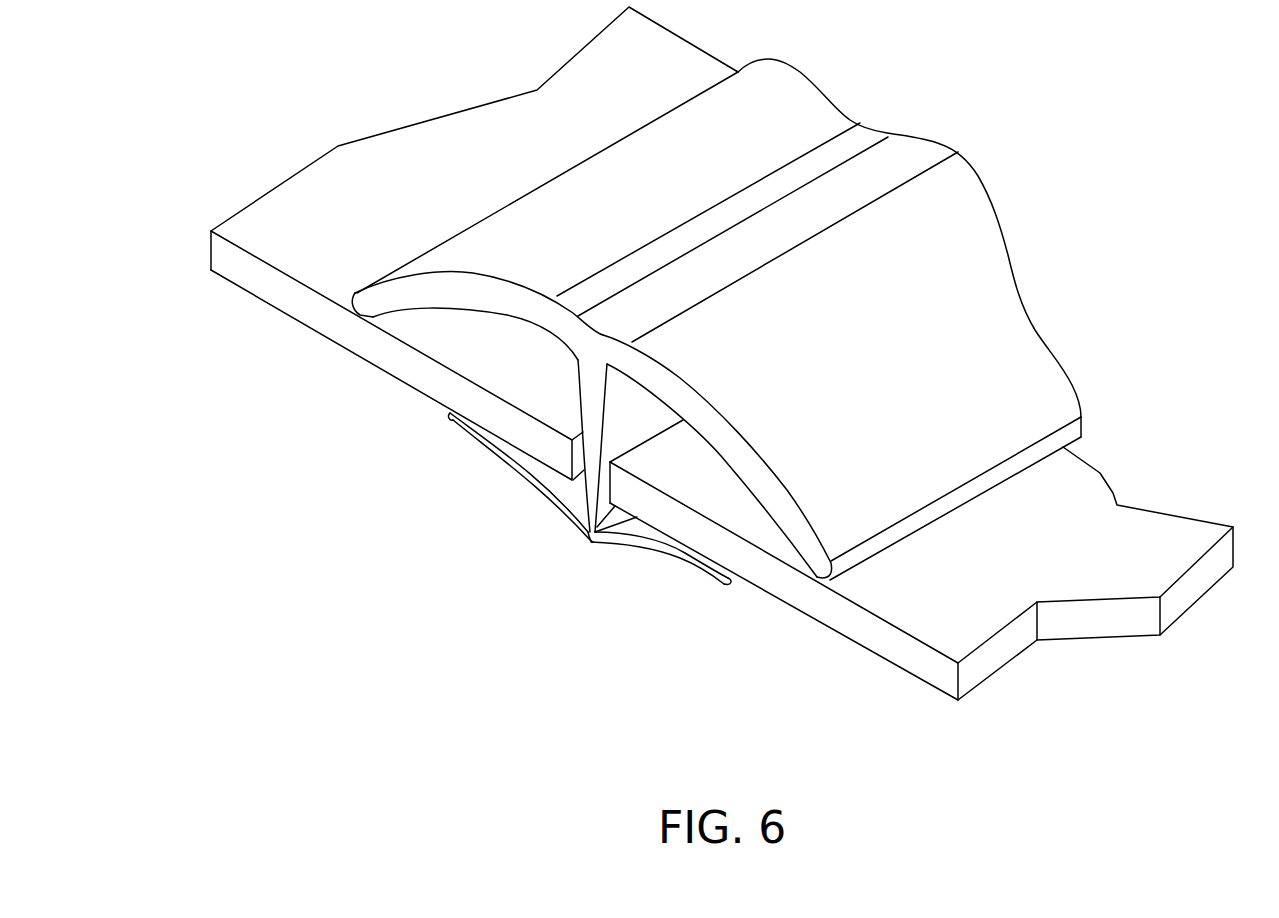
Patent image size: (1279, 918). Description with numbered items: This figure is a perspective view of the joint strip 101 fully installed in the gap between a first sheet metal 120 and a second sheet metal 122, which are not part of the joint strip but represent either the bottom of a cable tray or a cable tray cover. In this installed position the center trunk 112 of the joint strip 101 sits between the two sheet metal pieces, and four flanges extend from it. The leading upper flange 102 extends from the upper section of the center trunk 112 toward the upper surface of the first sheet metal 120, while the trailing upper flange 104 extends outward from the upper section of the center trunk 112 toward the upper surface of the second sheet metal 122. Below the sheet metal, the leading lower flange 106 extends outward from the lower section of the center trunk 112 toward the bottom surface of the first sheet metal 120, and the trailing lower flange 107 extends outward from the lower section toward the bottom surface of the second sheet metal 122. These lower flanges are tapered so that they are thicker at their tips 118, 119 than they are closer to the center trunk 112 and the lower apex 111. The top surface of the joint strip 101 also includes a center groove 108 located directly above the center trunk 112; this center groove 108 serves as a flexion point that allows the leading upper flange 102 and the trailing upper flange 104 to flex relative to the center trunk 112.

The joint strip 101 is at (997, 137).
The leading upper flange 102 is at (853, 495).
The trailing upper flange 104 is at (523, 223).
The leading lower flange 106 is at (667, 553).
The trailing lower flange 107 is at (510, 463).
The center groove 108 is at (655, 278).
The lower apex 111 is at (592, 545).
The center trunk 112 is at (593, 400).
The tip 118 is at (733, 582).
The tip 119 is at (448, 418).
The first sheet metal 120 is at (1160, 565).
The second sheet metal 122 is at (422, 147).